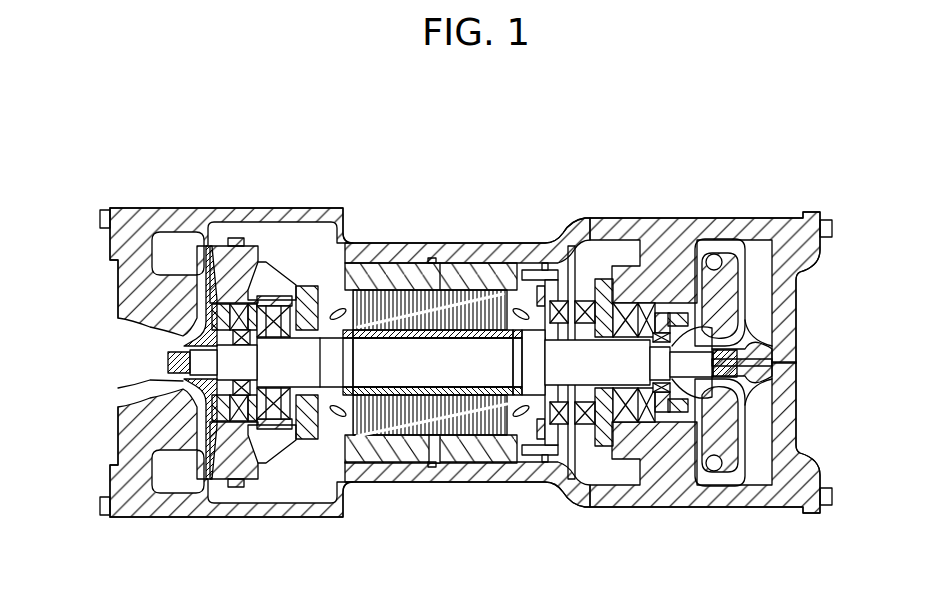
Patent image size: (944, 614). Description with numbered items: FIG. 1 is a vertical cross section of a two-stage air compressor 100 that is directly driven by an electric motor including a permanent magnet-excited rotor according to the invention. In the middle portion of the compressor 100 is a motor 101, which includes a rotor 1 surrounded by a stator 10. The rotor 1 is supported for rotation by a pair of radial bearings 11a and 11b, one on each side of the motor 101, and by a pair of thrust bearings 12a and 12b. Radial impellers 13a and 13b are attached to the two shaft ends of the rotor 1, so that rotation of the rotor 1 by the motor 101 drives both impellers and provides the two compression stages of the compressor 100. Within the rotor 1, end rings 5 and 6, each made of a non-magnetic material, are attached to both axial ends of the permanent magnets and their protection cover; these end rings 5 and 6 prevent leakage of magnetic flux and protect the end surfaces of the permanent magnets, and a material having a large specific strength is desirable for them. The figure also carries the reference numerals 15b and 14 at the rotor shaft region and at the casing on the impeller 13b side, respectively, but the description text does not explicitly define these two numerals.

The two-stage air compressor 100 is at (191, 196).
The motor 101 is at (562, 535).
The stator 10 is at (401, 243).
The rotor 1 is at (458, 347).
The end ring 5 is at (513, 344).
The end ring 6 is at (343, 338).
The rotating shaft 15b is at (375, 339).
The radial bearing 11a is at (272, 335).
The radial bearing 11b is at (620, 336).
The thrust bearing 12a is at (583, 301).
The thrust bearing 12b is at (583, 424).
The radial impeller 13a is at (118, 388).
The radial impeller 13b is at (772, 331).
The turbine housing 14 is at (756, 218).